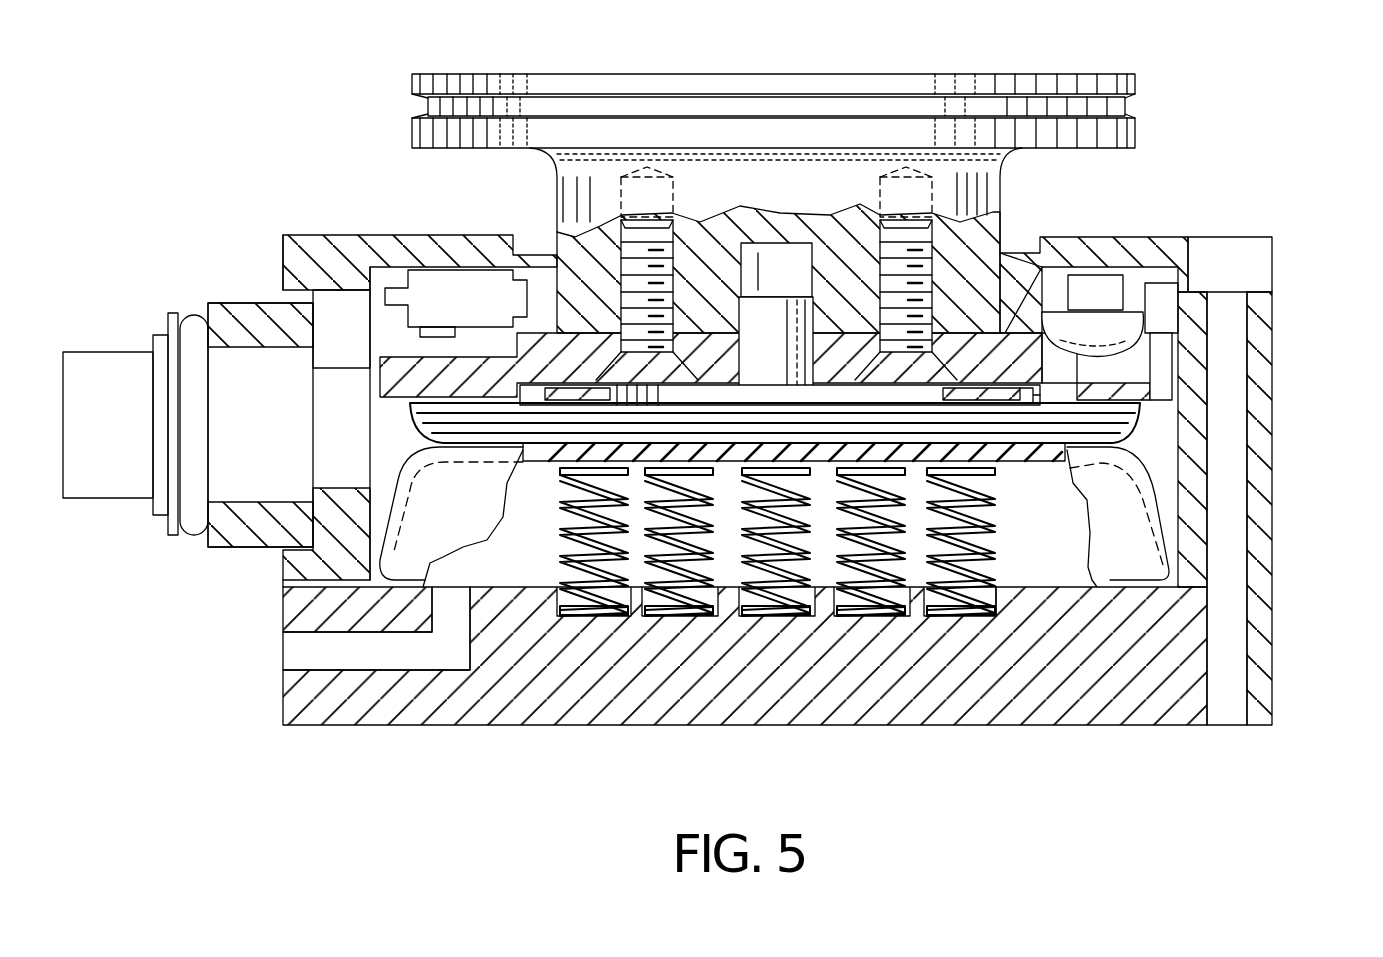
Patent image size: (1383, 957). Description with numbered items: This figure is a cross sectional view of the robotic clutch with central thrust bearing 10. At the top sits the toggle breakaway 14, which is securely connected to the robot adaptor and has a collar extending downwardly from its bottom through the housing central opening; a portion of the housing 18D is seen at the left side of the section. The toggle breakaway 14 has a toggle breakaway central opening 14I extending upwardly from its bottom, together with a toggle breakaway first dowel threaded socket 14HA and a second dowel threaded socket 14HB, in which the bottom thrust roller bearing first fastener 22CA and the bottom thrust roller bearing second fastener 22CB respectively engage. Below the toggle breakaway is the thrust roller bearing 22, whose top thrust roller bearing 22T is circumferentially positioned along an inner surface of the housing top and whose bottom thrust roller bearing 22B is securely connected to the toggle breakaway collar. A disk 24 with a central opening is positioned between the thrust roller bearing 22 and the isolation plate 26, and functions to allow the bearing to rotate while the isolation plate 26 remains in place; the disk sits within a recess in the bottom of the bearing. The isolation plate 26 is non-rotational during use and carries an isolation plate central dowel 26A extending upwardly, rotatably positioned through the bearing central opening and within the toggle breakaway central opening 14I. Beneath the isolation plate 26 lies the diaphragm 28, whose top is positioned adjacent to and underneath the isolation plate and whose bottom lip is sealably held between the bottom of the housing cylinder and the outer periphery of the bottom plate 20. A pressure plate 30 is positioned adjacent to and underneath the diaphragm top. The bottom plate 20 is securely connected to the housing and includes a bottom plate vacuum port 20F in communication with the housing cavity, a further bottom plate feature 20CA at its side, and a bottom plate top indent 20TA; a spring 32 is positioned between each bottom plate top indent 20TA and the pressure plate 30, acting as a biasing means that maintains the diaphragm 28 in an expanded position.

The robotic clutch with central thrust bearing 10 is at (736, 42).
The toggle breakaway 14 is at (1138, 133).
The hub portion B 14HB is at (620, 194).
The toggle breakaway first dowel threaded socket 14HA is at (960, 210).
The toggle breakaway central opening 14I is at (763, 310).
The drive shaft 18D is at (61, 480).
The bottom plate 20 is at (1263, 653).
The bottom plate vacuum port 20F is at (305, 650).
The housing channel 20CA is at (1227, 698).
The bottom plate top indent 20TA is at (990, 610).
The thrust roller bearing 22 is at (1017, 347).
The top thrust roller bearing 22T is at (1150, 320).
The bottom thrust roller bearing 22B is at (1167, 395).
The bottom thrust roller bearing second fastener 22CB is at (620, 252).
The bottom thrust roller bearing first fastener 22CA is at (913, 265).
The disk 24 is at (1047, 397).
The isolation plate 26 is at (637, 417).
The isolation plate central dowel 26A is at (760, 245).
The diaphragm 28 is at (1175, 511).
The pressure plate 30 is at (1068, 455).
The spring 32 is at (993, 560).